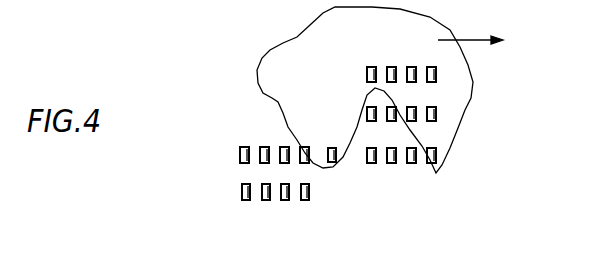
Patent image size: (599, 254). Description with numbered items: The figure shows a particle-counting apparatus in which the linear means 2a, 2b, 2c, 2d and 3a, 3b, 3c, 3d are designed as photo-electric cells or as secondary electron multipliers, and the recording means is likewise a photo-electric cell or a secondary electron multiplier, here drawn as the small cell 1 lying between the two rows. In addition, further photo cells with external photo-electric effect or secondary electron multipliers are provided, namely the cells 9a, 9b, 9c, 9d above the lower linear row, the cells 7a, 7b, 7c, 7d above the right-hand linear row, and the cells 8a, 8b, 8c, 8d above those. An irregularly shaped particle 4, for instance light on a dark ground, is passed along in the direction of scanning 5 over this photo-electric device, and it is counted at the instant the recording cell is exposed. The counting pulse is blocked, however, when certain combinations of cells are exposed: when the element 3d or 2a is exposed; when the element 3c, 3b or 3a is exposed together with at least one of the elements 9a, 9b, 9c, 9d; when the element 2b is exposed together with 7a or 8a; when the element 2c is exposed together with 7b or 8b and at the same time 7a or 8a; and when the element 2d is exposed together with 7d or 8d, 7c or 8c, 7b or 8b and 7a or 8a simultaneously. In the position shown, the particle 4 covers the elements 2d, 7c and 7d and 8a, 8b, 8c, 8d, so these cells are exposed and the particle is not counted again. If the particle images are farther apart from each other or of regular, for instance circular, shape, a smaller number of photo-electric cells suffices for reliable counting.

The reference mark 1 is at (333, 149).
The linear means element 2a is at (370, 163).
The linear means element 2b is at (389, 163).
The linear means element 2c is at (410, 163).
The linear means element 2d is at (433, 163).
The linear means element 3a is at (242, 200).
The linear means element 3b is at (263, 200).
The linear means element 3c is at (285, 200).
The linear means element 3d is at (305, 200).
The particle 4 is at (365, 90).
The direction of scanning 5 is at (466, 40).
The additional photo cell 7a is at (370, 121).
The additional photo cell 7b is at (392, 121).
The additional photo cell 7c is at (412, 121).
The additional photo cell 7d is at (433, 121).
The additional photo cell 8a is at (372, 67).
The additional photo cell 8b is at (392, 67).
The additional photo cell 8c is at (412, 67).
The additional photo cell 8d is at (432, 67).
The additional photo cell 9a is at (243, 148).
The additional photo cell 9b is at (263, 147).
The additional photo cell 9c is at (286, 147).
The additional photo cell 9d is at (305, 148).